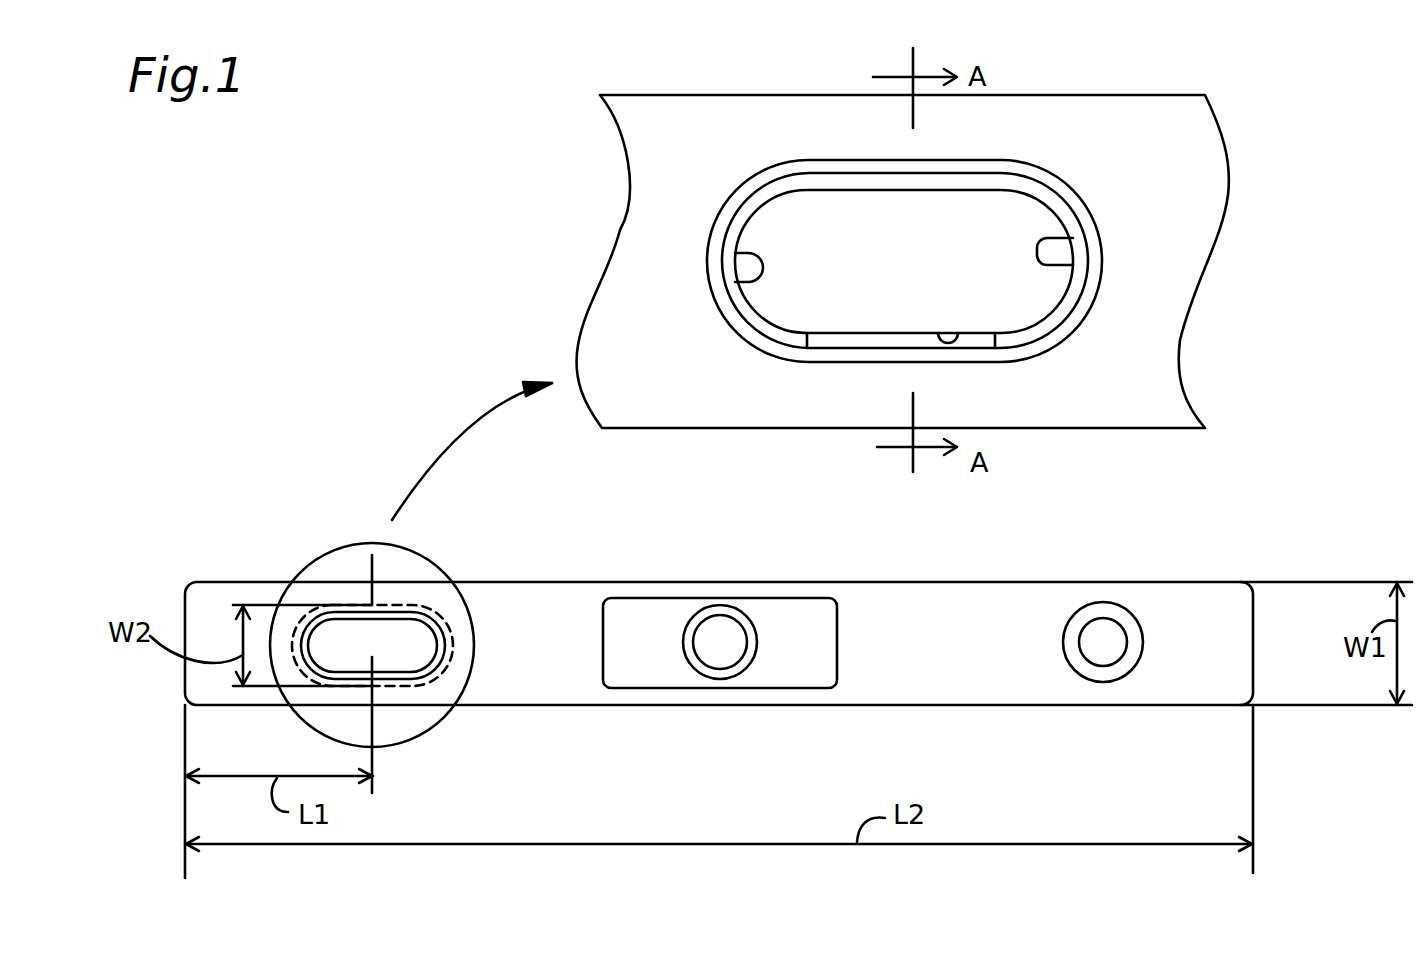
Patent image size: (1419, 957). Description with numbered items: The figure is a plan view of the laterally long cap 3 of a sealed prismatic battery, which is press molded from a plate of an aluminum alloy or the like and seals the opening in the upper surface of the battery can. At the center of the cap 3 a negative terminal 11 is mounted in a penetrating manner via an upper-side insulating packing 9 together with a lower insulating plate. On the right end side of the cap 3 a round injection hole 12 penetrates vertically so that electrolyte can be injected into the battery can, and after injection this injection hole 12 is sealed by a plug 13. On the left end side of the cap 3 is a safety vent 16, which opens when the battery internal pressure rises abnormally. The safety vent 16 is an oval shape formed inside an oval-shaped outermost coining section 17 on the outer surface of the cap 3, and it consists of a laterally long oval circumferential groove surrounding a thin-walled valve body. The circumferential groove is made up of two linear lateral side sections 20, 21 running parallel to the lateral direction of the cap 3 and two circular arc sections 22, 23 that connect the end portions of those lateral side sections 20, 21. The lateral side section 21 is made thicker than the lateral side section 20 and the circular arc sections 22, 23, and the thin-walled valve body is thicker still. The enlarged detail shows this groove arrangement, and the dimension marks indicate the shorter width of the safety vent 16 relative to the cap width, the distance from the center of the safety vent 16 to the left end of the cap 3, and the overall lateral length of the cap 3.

The cap 3 is at (1192, 152).
The upper-side insulating packing 9 is at (725, 670).
The negative terminal 11 is at (727, 632).
The injection hole 12 is at (1107, 633).
The plug 13 is at (1093, 607).
The safety vent 16 is at (330, 593).
The outermost coining section 17 is at (383, 685).
The lateral side section 20 is at (862, 173).
The lateral side section 21 is at (957, 333).
The circular arc section 22 is at (760, 268).
The circular arc section 23 is at (1052, 263).